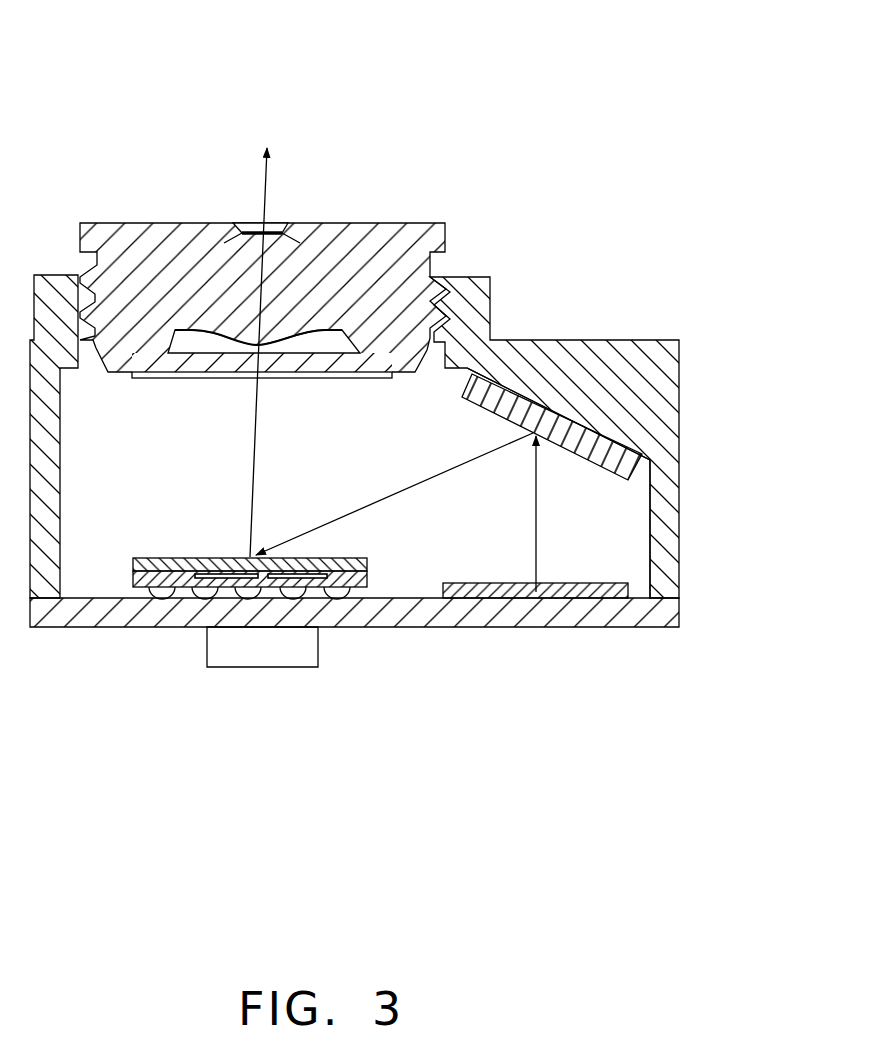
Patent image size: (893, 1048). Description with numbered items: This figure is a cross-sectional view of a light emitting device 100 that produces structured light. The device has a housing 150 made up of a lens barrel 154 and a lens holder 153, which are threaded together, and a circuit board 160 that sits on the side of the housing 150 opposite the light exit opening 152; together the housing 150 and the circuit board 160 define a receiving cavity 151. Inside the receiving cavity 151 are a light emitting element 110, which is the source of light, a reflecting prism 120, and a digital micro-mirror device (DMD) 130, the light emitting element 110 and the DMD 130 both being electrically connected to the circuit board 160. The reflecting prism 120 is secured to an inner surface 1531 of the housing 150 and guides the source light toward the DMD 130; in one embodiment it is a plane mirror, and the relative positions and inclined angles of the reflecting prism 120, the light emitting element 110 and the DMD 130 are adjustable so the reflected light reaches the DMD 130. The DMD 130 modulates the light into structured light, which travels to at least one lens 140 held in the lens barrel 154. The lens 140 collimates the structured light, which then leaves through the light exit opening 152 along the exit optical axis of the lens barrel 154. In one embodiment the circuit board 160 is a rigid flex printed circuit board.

The light emitting device 100 is at (309, 66).
The light emitting element 110 is at (614, 592).
The reflecting prism 120 is at (601, 450).
The digital micro-mirror device (DMD) 130 is at (168, 567).
The lens 140 is at (207, 333).
The housing 150 is at (548, 211).
The receiving cavity 151 is at (624, 530).
The light exit opening 152 is at (276, 220).
The lens holder 153 is at (462, 307).
The inner surface 1531 is at (581, 417).
The lens barrel 154 is at (400, 278).
The circuit board 160 is at (660, 617).